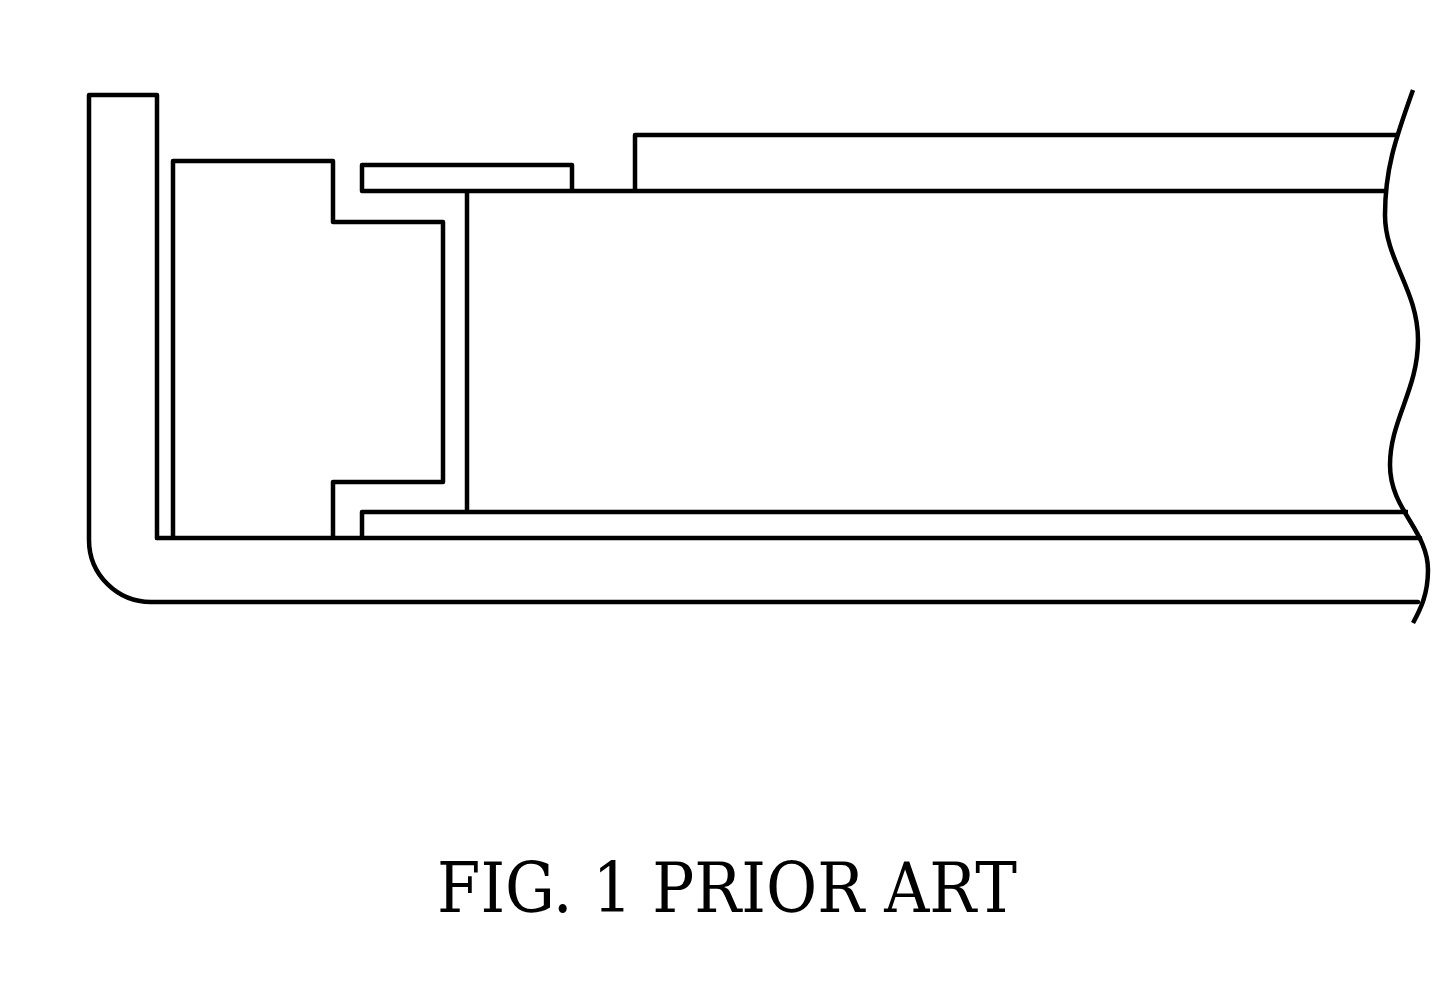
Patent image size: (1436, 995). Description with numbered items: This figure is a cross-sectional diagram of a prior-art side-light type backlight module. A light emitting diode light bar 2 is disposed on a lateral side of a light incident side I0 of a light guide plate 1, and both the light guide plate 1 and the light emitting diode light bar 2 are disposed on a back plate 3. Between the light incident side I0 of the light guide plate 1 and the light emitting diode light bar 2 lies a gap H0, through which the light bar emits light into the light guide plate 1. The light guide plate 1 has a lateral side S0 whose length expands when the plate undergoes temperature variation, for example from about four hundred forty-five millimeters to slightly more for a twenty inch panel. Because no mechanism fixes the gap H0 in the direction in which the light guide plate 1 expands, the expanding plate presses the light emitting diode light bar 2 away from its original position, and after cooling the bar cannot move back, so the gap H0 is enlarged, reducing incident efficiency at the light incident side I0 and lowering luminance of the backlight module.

The light guide plate 1 is at (1028, 465).
The light emitting diode light bar 2 is at (272, 432).
The back plate 3 is at (465, 575).
The gap H0 is at (388, 292).
The light incident side I0 is at (467, 423).
The lateral side S0 is at (755, 458).